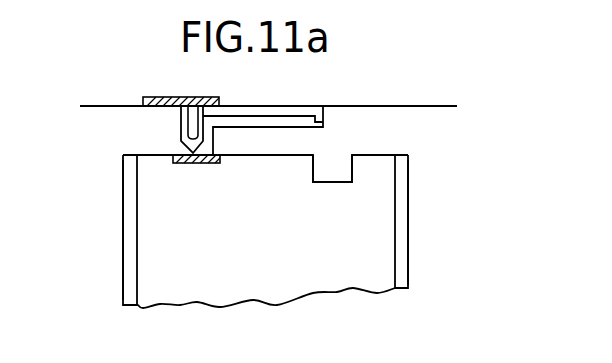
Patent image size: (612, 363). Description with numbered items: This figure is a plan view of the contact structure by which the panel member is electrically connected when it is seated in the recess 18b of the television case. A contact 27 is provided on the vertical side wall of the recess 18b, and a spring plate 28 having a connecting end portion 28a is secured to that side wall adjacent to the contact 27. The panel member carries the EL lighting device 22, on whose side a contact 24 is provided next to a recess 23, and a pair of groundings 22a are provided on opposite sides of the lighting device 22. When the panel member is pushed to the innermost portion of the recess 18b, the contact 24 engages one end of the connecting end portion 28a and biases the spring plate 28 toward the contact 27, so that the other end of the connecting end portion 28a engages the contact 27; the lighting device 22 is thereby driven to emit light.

The recess 18b is at (432, 107).
The contact 27 is at (200, 101).
The connecting end portion 28a is at (181, 132).
The spring plate 28 is at (260, 127).
The contact 24 is at (211, 159).
The EL lighting device 22 is at (160, 295).
The groundings 22a is at (127, 218).
The recess 23 is at (349, 172).